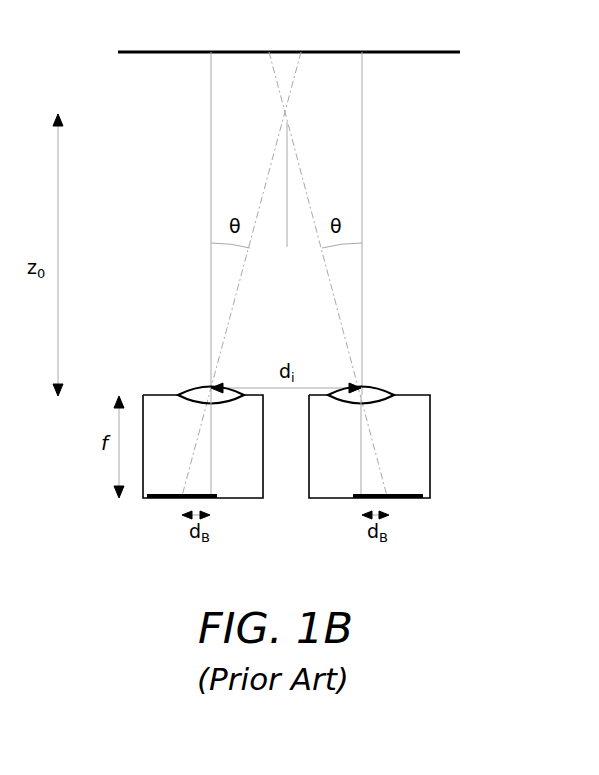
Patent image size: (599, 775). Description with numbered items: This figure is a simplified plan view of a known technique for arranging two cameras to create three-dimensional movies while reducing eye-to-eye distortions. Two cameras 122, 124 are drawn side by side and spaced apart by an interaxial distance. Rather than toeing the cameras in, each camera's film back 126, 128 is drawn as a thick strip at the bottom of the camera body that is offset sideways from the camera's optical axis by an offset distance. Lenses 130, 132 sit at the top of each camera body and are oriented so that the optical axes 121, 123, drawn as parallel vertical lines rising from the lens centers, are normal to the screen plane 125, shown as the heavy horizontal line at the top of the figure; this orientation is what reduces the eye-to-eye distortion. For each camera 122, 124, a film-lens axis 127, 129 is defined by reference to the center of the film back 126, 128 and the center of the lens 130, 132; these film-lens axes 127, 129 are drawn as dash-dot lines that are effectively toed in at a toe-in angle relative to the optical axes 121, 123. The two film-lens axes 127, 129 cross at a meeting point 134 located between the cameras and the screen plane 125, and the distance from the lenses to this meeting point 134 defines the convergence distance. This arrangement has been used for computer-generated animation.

The optical axis 121 is at (210, 195).
The camera 122 is at (230, 500).
The optical axis 123 is at (363, 195).
The camera 124 is at (330, 500).
The screen plane 125 is at (347, 52).
The film back 126 is at (177, 498).
The film-lens axis 127 is at (277, 149).
The film back 128 is at (400, 498).
The film-lens axis 129 is at (297, 152).
The lens 130 is at (190, 388).
The lens 132 is at (378, 388).
The meeting point 134 is at (288, 195).